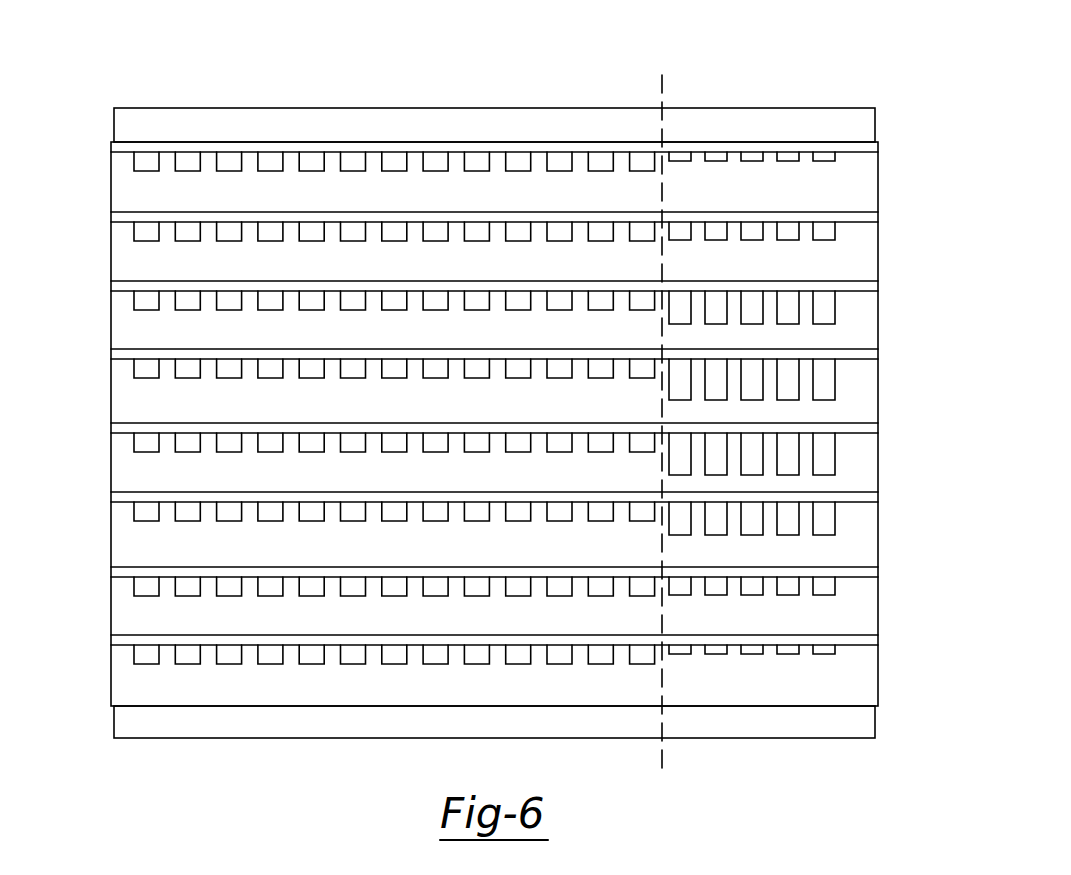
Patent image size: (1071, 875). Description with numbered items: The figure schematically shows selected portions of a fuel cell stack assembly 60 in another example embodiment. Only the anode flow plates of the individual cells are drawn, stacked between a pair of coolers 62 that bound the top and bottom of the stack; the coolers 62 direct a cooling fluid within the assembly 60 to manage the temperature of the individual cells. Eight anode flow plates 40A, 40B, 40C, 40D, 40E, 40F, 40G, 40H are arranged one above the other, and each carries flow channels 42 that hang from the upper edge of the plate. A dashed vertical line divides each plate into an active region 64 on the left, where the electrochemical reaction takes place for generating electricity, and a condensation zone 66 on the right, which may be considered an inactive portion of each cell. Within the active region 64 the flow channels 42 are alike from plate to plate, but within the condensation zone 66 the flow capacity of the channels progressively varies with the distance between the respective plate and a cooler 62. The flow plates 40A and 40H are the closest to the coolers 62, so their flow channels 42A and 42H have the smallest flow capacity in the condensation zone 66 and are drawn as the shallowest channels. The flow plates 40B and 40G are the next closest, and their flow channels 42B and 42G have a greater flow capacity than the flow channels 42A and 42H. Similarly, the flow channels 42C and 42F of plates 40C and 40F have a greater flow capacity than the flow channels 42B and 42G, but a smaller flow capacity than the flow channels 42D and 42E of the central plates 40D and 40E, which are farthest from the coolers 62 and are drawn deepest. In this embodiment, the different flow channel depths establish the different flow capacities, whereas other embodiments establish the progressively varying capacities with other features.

The fuel cell stack assembly 60 is at (117, 47).
The coolers 62 is at (855, 127).
The active region 64 is at (394, 348).
The condensation zone 66 is at (800, 410).
The flow channels 42 is at (233, 167).
The flow channels of flow plate 40A 42A is at (682, 160).
The flow channels of flow plate 40B 42B is at (827, 232).
The flow channels of flow plate 40C 42C is at (827, 315).
The flow channels of flow plate 40D 42D is at (827, 383).
The flow channels of flow plate 40E 42E is at (827, 459).
The flow channels of flow plate 40F 42F is at (827, 525).
The flow channels of flow plate 40G 42G is at (827, 585).
The flow channels of flow plate 40H 42H is at (753, 652).
The anode flow plate 40A is at (132, 188).
The anode flow plate 40B is at (132, 258).
The anode flow plate 40C is at (132, 326).
The anode flow plate 40D is at (132, 397).
The anode flow plate 40E is at (132, 469).
The anode flow plate 40F is at (132, 541).
The anode flow plate 40G is at (132, 612).
The anode flow plate 40H is at (132, 682).